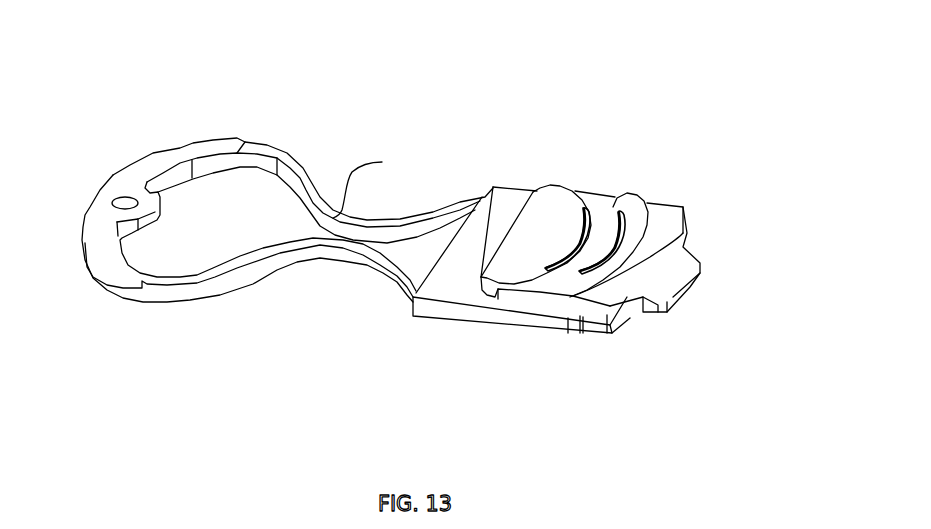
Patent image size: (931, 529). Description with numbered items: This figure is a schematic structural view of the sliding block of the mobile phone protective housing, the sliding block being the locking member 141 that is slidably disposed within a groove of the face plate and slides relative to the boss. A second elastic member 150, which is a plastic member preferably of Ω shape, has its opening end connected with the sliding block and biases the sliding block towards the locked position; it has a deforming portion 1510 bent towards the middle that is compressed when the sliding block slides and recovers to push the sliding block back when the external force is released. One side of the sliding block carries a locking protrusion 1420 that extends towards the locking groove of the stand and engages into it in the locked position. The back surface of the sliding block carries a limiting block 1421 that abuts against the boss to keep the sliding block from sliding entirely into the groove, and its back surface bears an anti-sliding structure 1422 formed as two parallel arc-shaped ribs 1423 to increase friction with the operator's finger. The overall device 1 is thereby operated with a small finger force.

The tracking device 1 is at (127, 200).
The second elastic member 150 is at (287, 176).
The deforming portion 1510 is at (340, 257).
The locking member 141 is at (533, 330).
The locking protrusion 1420 is at (693, 262).
The limiting block 1421 is at (617, 195).
The anti-sliding structure 1422 is at (580, 195).
The ribs 1423 is at (563, 190).